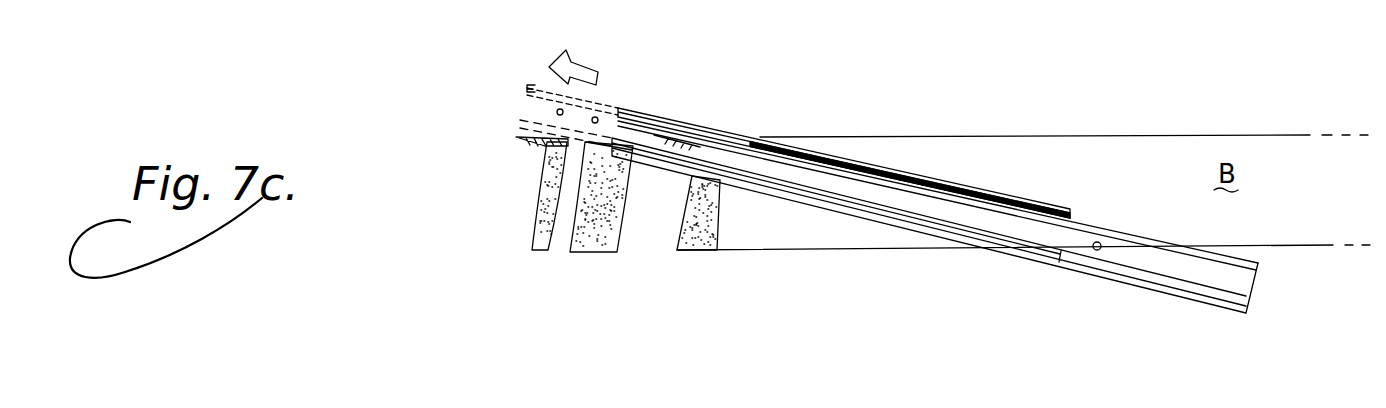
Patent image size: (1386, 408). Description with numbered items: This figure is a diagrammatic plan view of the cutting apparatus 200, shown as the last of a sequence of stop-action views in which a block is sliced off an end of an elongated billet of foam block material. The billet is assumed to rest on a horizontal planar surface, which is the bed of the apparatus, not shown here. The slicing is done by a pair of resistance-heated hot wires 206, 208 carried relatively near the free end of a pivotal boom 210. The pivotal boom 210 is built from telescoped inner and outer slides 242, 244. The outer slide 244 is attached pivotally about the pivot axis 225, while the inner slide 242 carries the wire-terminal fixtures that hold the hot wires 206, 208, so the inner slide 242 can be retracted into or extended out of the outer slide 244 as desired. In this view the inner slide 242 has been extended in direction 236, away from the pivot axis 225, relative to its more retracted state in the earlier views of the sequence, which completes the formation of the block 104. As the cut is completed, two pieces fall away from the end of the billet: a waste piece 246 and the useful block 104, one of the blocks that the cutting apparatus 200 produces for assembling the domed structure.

The cutting apparatus 200 is at (775, 281).
The block 104 is at (577, 253).
The waste piece 246 is at (538, 252).
The hot wire 206 is at (654, 134).
The hot wire 208 is at (697, 148).
The pivotal boom 210 is at (1251, 265).
The pivot axis 225 is at (1099, 241).
The direction 236 is at (562, 60).
The inner slide 242 is at (1190, 244).
The outer slide 244 is at (631, 107).